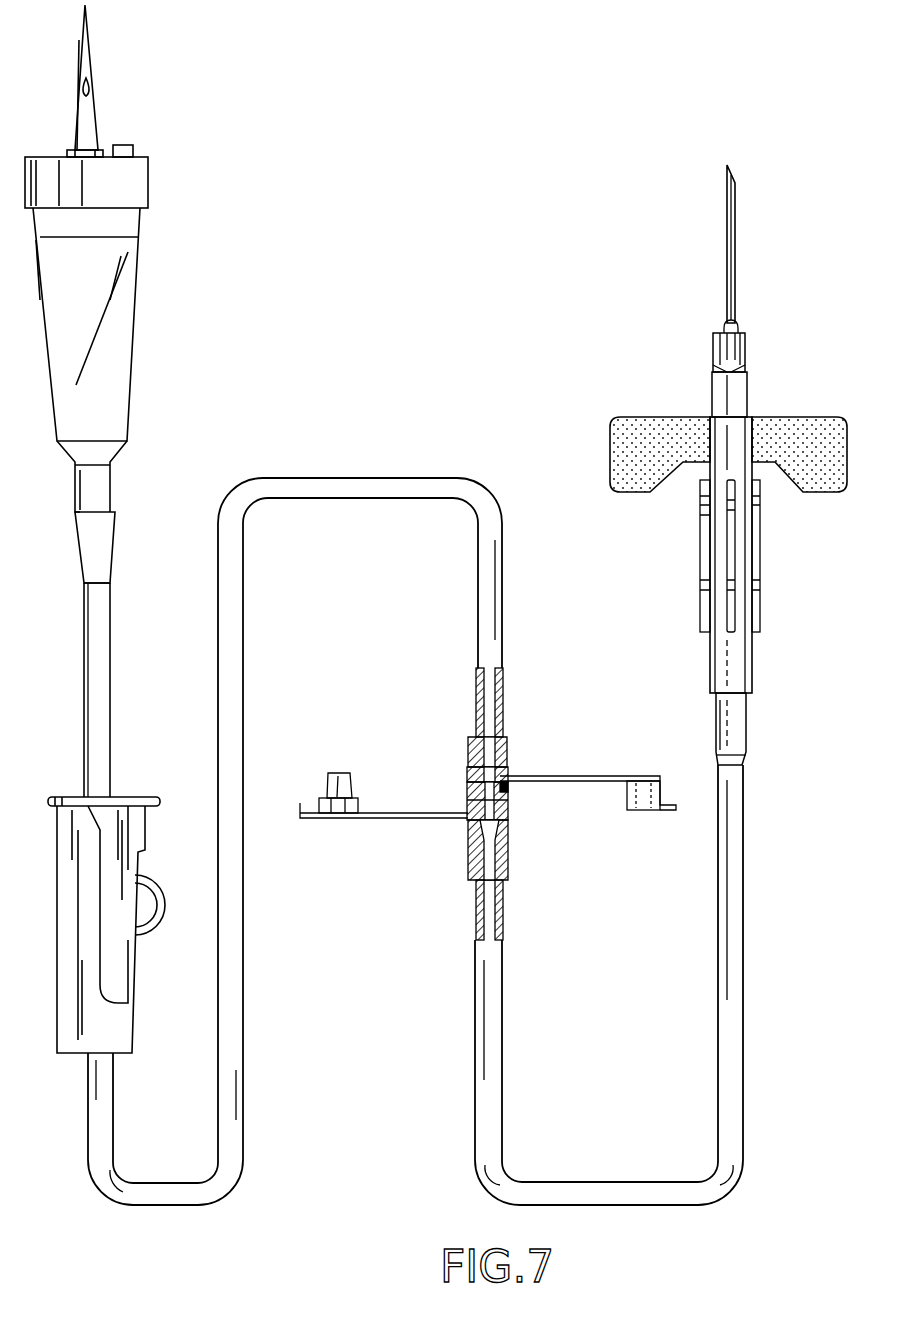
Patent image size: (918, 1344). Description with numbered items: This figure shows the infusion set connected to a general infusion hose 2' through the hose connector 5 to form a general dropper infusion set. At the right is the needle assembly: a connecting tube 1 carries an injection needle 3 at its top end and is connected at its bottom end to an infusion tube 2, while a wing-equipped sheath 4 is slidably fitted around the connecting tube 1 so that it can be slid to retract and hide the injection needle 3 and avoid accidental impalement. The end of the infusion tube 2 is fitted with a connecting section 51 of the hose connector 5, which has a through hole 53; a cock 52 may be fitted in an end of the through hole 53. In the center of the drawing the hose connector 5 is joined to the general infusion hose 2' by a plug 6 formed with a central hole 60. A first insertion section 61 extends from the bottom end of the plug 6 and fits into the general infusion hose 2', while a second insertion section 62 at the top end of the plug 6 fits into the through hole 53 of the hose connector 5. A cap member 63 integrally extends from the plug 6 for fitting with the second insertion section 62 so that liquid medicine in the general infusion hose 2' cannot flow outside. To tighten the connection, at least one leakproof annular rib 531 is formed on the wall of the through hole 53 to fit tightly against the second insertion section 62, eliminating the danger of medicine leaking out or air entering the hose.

The connecting tube 1 is at (735, 645).
The infusion tube 2 is at (637, 985).
The general infusion hose 2' is at (293, 841).
The injection needle 3 is at (748, 326).
The wing-equipped sheath 4 is at (764, 598).
The hose connector 5 is at (466, 802).
The connecting section 51 is at (478, 917).
The cock 52 is at (333, 773).
The through hole 53 is at (470, 822).
The leakproof annular rib 531 is at (507, 787).
The plug 6 is at (552, 778).
The central hole 60 is at (472, 762).
The first insertion section 61 is at (500, 740).
The second insertion section 62 is at (506, 825).
The cap member 63 is at (645, 805).